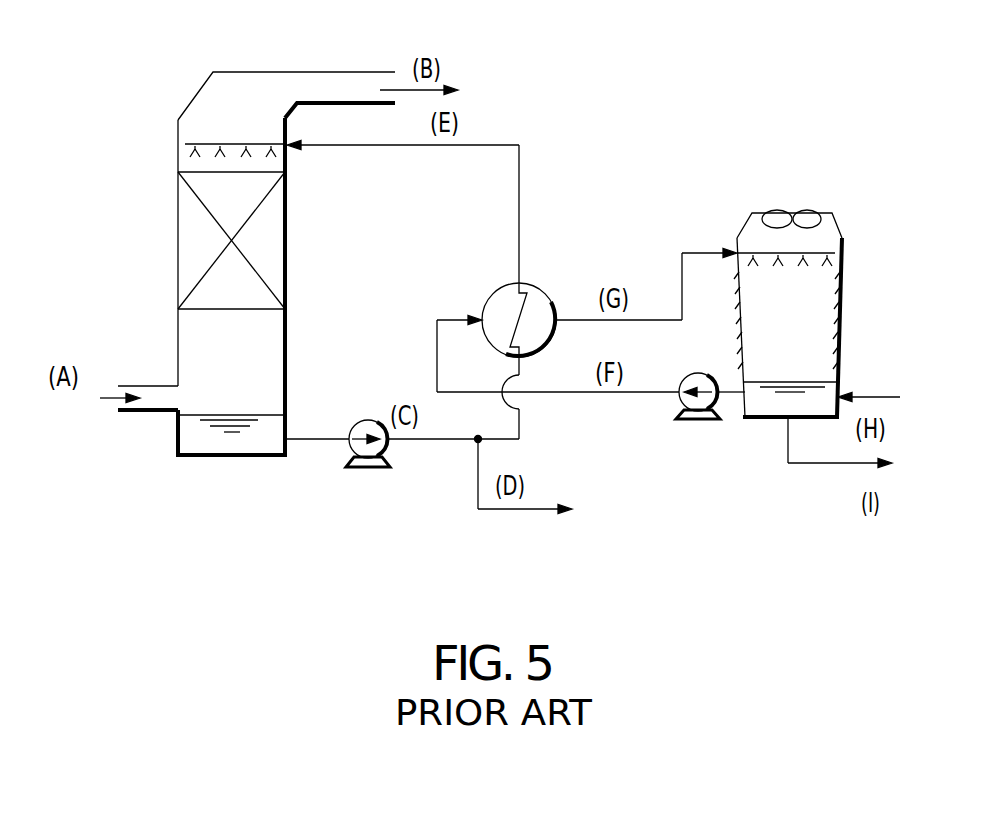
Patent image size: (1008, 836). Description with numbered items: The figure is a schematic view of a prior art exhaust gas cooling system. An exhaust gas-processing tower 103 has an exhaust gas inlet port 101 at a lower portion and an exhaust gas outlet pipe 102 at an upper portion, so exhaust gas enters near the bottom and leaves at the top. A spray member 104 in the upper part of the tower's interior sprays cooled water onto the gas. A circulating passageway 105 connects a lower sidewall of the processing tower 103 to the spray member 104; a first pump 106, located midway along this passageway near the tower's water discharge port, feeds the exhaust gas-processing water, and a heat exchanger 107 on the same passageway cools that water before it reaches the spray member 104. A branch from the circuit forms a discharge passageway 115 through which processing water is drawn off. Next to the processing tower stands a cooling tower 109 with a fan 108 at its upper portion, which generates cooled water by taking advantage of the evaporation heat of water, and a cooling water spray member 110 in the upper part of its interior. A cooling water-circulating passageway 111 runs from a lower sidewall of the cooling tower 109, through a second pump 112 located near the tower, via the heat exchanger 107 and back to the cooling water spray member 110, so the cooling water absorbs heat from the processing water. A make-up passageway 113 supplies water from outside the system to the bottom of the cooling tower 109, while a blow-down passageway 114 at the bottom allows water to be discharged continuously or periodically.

The exhaust gas inlet port 101 is at (134, 384).
The exhaust gas outlet pipe 102 is at (328, 72).
The exhaust gas-processing tower 103 is at (310, 266).
The spray member 104 is at (205, 143).
The circulating passageway 105 is at (519, 183).
The first pump 106 is at (368, 470).
The heat exchanger 107 is at (541, 291).
The fan 108 is at (792, 210).
The cooling tower 109 is at (860, 297).
The cooling water spray member 110 is at (817, 253).
The cooling water-circulating passageway 111 is at (585, 396).
The second pump 112 is at (698, 421).
The make-up passageway 113 is at (879, 396).
The blow-down passageway 114 is at (820, 466).
The discharge passageway 115 is at (515, 512).